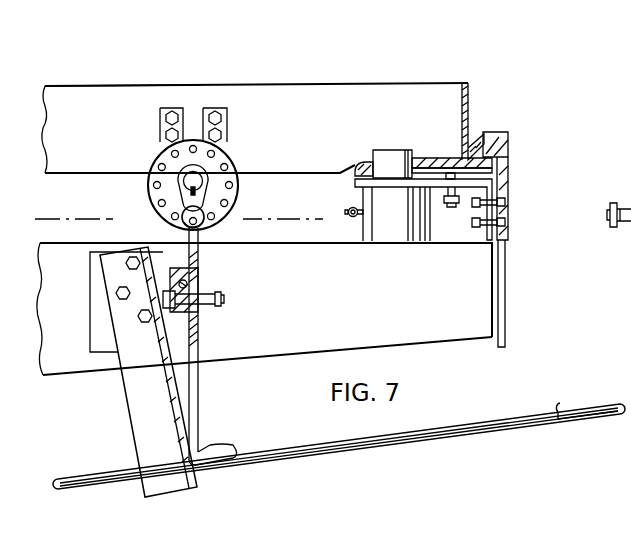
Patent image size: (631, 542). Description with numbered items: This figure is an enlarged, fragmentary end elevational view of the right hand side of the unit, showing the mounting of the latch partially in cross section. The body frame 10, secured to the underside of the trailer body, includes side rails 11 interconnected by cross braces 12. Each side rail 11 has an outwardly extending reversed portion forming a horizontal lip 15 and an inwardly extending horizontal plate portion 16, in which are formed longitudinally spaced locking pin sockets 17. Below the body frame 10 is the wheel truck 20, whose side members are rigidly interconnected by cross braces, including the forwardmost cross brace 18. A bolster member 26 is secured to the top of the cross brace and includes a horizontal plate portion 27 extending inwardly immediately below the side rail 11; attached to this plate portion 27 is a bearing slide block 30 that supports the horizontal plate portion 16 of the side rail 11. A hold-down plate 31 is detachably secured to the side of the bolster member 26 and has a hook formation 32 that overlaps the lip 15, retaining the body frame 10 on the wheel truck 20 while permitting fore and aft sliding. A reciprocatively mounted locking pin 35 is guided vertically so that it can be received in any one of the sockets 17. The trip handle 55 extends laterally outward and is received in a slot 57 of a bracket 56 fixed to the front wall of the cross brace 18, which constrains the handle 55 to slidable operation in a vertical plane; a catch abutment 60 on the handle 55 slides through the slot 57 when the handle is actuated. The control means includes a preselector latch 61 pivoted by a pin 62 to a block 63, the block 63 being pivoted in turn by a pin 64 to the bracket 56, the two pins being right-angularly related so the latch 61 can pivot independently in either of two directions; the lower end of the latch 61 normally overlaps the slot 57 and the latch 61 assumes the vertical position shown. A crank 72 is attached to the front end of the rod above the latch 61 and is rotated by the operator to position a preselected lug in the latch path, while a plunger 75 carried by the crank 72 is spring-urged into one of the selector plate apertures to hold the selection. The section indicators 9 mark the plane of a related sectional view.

The body frame 10 is at (98, 84).
The cross braces 12 is at (312, 105).
The side rails 11 is at (472, 127).
The hook formation 32 is at (488, 136).
The horizontal lip 15 is at (498, 152).
The horizontal plate portion 16 is at (440, 158).
The locking pin 35 is at (390, 150).
The locking pin sockets 17 is at (375, 160).
The bolster member 26 is at (483, 238).
The horizontal plate portion 27 is at (395, 188).
The bearing slide block 30 is at (500, 172).
The hold-down plate 31 is at (510, 234).
The crank 72 is at (178, 185).
The plunger 75 is at (612, 229).
The section line 9- 9 is at (61, 243).
The cross brace 18 is at (373, 301).
The wheel truck 20 is at (438, 344).
The bracket 56 is at (137, 396).
The slot 57 is at (185, 453).
The preselector latch 61 is at (200, 381).
The catch abutment 60 is at (220, 452).
The pin 64 is at (192, 271).
The block 63 is at (191, 293).
The pin 62 is at (226, 301).
The trip handle 55 is at (393, 452).